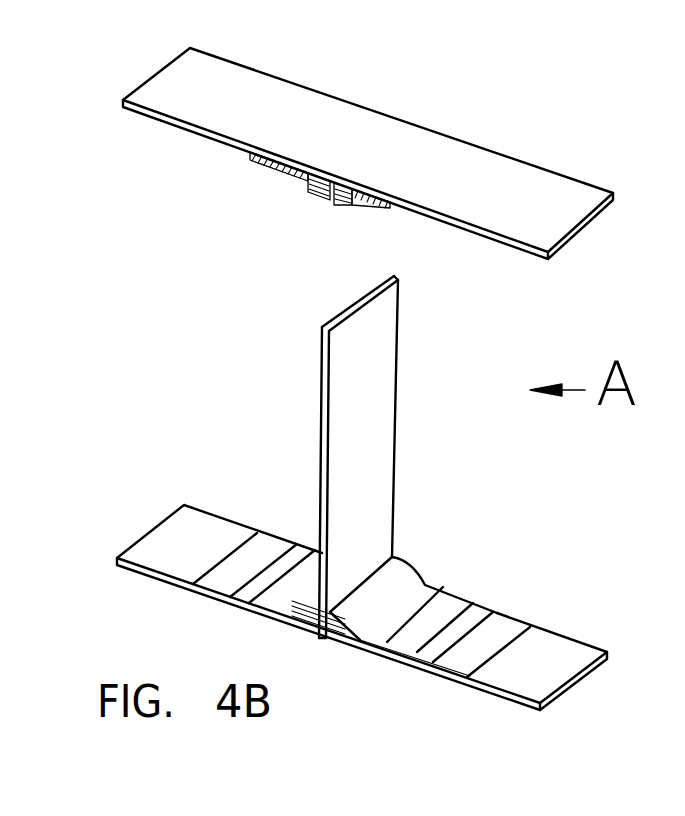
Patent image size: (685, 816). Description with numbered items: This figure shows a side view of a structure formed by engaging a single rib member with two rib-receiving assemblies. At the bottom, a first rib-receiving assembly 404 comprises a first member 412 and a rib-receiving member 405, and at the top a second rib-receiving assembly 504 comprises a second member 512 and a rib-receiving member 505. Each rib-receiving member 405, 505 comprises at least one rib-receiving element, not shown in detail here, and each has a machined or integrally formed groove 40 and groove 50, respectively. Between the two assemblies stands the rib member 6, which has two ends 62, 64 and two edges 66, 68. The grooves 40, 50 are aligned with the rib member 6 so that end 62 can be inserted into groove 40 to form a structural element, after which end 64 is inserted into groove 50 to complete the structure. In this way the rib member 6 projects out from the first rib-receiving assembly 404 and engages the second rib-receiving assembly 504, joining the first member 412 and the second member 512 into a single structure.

The rib member 6 is at (361, 462).
The groove 40 is at (333, 618).
The groove 50 is at (292, 218).
The end 62 is at (319, 636).
The end 64 is at (386, 278).
The edge 66 is at (323, 408).
The edge 68 is at (397, 383).
The first rib-receiving assembly 404 is at (351, 583).
The rib-receiving member 405 is at (413, 581).
The first member 412 is at (138, 540).
The second rib-receiving assembly 504 is at (388, 173).
The rib-receiving member 505 is at (308, 186).
The second member 512 is at (128, 110).